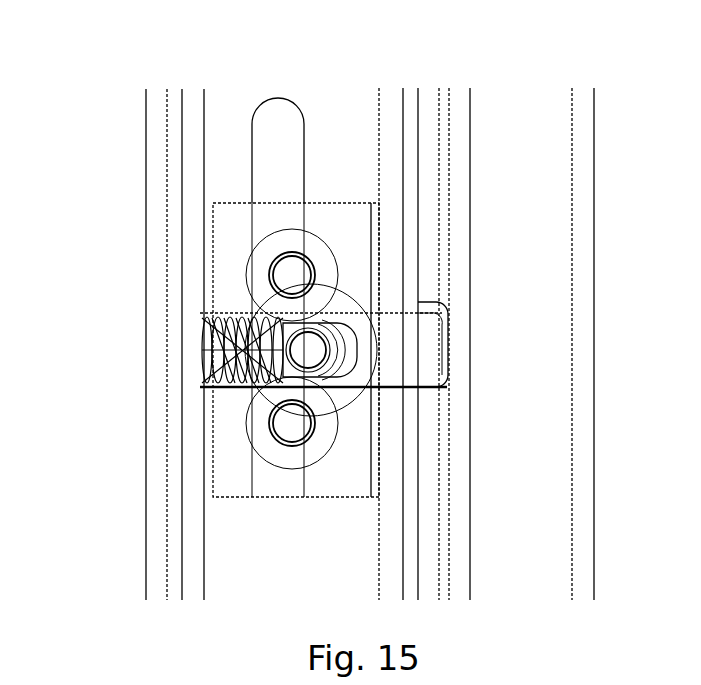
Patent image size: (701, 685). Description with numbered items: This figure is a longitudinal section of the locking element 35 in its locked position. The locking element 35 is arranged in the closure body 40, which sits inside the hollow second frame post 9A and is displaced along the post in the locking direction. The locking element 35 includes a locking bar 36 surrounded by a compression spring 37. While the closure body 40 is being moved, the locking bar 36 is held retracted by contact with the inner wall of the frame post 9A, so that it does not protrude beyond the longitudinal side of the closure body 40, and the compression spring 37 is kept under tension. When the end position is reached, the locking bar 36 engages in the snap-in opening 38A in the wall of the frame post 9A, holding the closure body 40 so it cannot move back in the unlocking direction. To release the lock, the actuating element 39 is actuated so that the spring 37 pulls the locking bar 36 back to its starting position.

The second frame post 9A is at (430, 127).
The locking element 35 is at (202, 438).
The locking bar 36 is at (428, 343).
The compression spring 37 is at (228, 318).
The slot 38A is at (420, 388).
The actuating element 39 is at (277, 170).
The closure body 40 is at (192, 542).